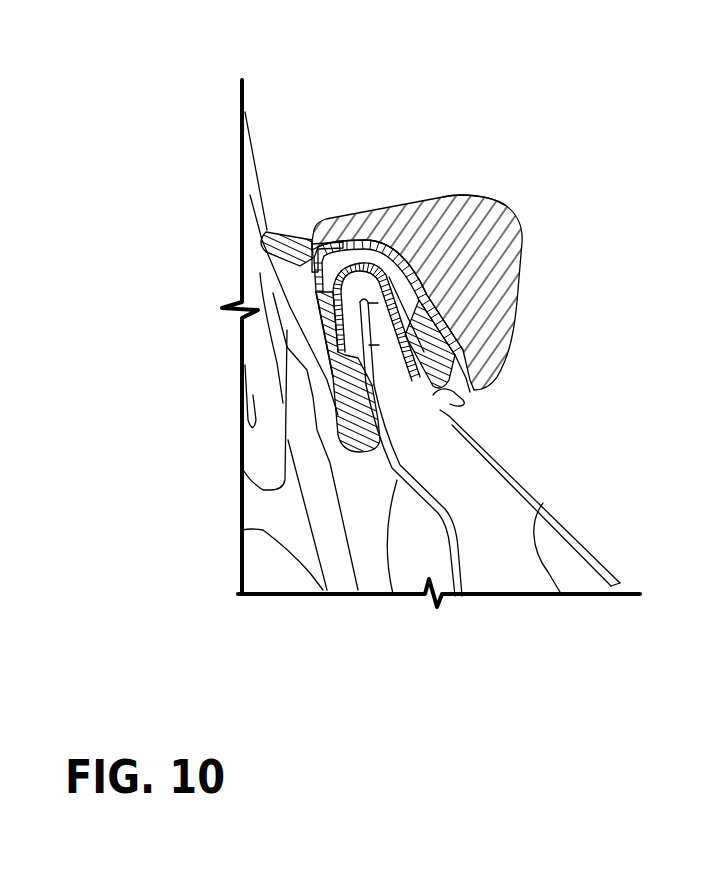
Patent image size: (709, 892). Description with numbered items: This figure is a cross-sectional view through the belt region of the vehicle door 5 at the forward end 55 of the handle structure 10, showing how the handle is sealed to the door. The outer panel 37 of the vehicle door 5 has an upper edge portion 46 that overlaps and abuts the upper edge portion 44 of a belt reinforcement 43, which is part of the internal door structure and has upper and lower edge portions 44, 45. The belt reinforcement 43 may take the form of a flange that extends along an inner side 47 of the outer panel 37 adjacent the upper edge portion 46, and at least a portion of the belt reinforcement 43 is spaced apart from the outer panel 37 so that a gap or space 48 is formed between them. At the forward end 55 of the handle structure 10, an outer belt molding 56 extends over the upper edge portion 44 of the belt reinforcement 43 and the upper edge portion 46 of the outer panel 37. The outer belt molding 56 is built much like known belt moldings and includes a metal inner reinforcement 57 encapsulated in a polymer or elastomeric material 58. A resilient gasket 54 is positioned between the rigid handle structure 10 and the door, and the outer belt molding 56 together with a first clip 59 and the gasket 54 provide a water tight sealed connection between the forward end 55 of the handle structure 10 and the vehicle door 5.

The handle structure 10 is at (532, 258).
The forward end of handle structure 55 is at (492, 196).
The resilient gasket 54 is at (289, 232).
The upper edge portion of outer panel 46 is at (384, 264).
The upper edge portion of belt reinforcement 44 is at (320, 292).
The polymer or elastomeric material 58 is at (328, 318).
The metal inner reinforcement 57 is at (345, 335).
The outer belt molding 56 is at (350, 453).
The first clip 59 is at (455, 394).
The gap or space 48 is at (449, 470).
The lower edge portion of belt reinforcement 45 is at (460, 596).
The outer panel 37 is at (563, 511).
The vehicle door 5 is at (597, 549).
The inner side of outer panel 47 is at (560, 592).
The belt reinforcement 43 is at (393, 594).